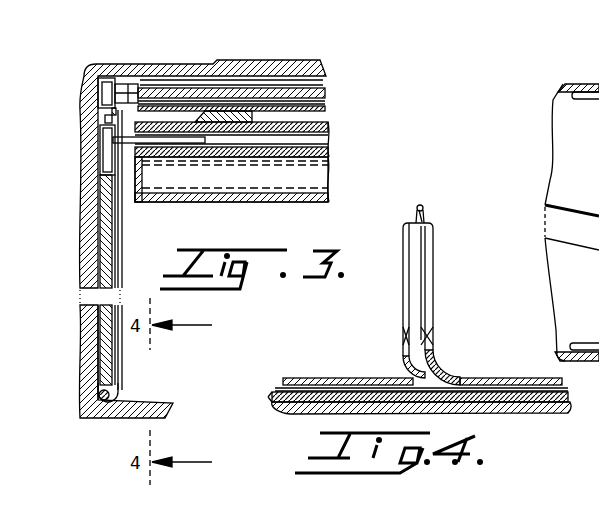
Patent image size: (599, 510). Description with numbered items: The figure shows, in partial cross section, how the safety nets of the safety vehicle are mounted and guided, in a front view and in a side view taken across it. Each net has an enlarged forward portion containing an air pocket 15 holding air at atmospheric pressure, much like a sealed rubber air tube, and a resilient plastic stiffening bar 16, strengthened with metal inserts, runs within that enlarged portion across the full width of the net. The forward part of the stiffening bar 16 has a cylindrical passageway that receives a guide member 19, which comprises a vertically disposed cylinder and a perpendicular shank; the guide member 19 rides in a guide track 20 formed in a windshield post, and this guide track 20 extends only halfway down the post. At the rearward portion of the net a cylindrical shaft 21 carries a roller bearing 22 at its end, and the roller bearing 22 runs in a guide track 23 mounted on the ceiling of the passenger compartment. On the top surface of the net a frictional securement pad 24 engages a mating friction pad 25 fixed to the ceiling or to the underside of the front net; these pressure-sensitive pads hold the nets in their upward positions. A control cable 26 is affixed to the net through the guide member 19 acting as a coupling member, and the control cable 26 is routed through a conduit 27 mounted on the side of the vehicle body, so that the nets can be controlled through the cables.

In FIG. 3, the air pocket 15 is at (190, 170).
In FIG. 3, the stiffening bar 16 is at (330, 133).
In FIG. 3, the guide member 19 is at (104, 152).
In FIG. 3, the guide track 20 is at (100, 240).
In FIG. 3, the cylindrical shaft 21 is at (277, 87).
In FIG. 3, the roller bearing 22 is at (110, 80).
In FIG. 3, the guide track 23 is at (92, 95).
In FIG. 3, the frictional securement pad 24 is at (250, 125).
In FIG. 3, the friction pad 25 is at (187, 107).
In FIG. 3, the control cable 26 is at (110, 282).
In FIG. 4, the control cable 26 is at (423, 216).
In FIG. 3, the conduit 27 is at (108, 392).
In FIG. 4, the conduit 27 is at (293, 378).